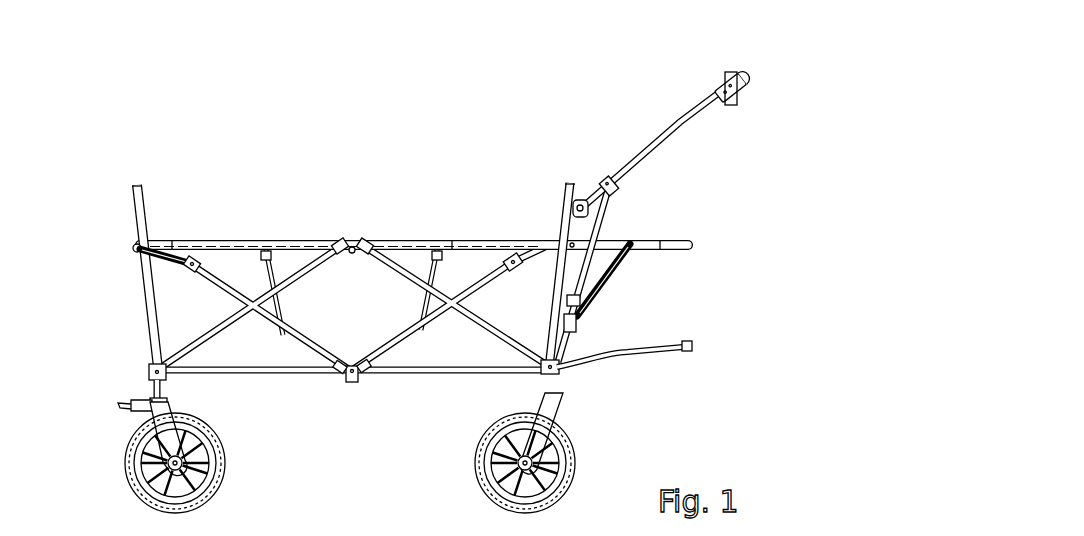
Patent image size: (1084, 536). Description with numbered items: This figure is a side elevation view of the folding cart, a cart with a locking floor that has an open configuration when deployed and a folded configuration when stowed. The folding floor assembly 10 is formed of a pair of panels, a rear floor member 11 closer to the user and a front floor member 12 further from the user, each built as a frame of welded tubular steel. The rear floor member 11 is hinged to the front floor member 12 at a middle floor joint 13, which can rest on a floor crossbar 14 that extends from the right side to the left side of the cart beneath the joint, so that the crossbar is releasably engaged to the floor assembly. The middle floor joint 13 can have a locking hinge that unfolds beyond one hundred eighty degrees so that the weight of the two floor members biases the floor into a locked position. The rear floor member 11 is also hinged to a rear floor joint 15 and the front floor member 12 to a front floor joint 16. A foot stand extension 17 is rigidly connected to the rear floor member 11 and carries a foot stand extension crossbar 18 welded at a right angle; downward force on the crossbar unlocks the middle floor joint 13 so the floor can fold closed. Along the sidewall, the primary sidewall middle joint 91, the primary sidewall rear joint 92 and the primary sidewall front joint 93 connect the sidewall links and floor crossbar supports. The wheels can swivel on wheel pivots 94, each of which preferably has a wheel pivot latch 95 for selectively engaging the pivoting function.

The folding floor assembly 10 is at (138, 376).
The rear floor member 11 is at (447, 374).
The front floor member 12 is at (258, 378).
The middle floor joint 13 is at (353, 384).
The floor crossbar 14 is at (360, 380).
The rear floor joint 15 is at (560, 372).
The front floor joint 16 is at (147, 367).
The foot stand extension 17 is at (620, 349).
The foot stand extension crossbar 18 is at (690, 343).
The primary sidewall middle joint 91 is at (353, 366).
The primary sidewall rear joint 92 is at (514, 257).
The primary sidewall front joint 93 is at (195, 261).
The wheel pivot 94 is at (163, 406).
The wheel pivot latch 95 is at (128, 409).